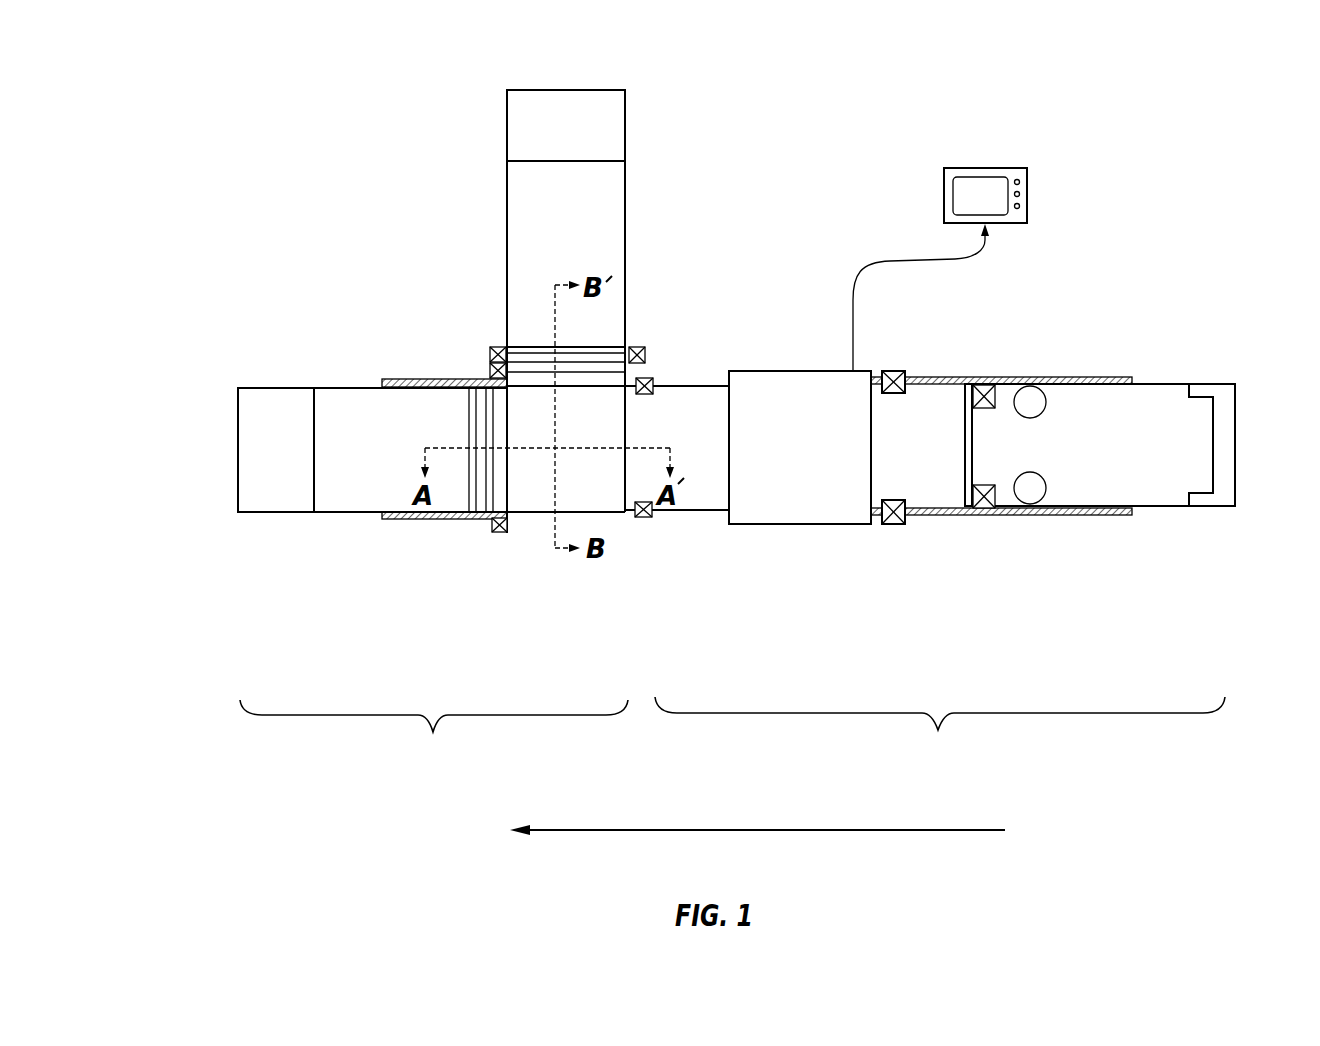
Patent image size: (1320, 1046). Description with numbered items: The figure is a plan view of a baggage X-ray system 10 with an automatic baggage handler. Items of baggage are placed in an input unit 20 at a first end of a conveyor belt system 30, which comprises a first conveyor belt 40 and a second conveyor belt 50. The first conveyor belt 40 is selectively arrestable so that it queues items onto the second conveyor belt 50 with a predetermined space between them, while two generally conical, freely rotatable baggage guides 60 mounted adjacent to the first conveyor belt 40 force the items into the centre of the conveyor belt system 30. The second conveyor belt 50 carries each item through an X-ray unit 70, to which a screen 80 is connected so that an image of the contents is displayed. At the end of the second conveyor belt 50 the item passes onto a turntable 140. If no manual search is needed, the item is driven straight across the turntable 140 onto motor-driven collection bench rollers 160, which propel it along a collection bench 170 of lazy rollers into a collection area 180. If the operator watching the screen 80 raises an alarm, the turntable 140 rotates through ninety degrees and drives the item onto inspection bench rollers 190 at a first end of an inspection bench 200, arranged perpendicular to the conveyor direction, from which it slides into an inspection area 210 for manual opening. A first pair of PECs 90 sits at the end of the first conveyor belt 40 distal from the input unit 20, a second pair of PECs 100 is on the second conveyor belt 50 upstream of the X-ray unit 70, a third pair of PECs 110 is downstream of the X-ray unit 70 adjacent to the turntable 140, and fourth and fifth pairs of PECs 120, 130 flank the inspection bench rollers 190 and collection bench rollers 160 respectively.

The baggage X-ray system 10 is at (983, 95).
The input unit 20 is at (1227, 412).
The conveyor belt system 30 is at (940, 732).
The first conveyor belt 40 is at (1142, 493).
The second conveyor belt 50 is at (697, 493).
The baggage guides 60 is at (1030, 495).
The X-ray unit 70 is at (825, 385).
The screen 80 is at (1017, 168).
The first pair of PECs 90 is at (995, 378).
The second pair of PECs 100 is at (900, 370).
The third pair of PECs 110 is at (653, 378).
The fourth pair of PECs 120 is at (645, 347).
The fifth pair of PECs 130 is at (485, 497).
The turntable 140 is at (613, 495).
The collection bench rollers 160 is at (500, 534).
The collection bench 170 is at (355, 497).
The collection area 180 is at (257, 497).
The inspection bench rollers 190 is at (507, 347).
The inspection bench 200 is at (607, 197).
The inspection area 210 is at (607, 100).